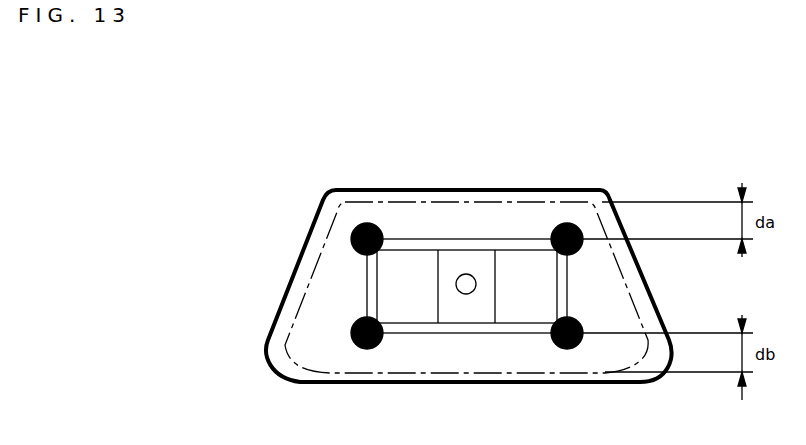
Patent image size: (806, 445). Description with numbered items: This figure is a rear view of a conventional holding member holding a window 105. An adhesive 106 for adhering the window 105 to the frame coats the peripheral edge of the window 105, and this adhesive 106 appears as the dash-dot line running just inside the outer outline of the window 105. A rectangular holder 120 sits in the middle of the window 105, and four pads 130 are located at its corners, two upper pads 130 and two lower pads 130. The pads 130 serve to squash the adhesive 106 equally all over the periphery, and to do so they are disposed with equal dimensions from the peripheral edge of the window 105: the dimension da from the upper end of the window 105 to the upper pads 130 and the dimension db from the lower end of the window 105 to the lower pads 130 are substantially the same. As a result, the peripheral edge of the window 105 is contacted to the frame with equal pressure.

The window 105 is at (513, 189).
The adhesive 106 is at (318, 254).
The substrate frame 120 is at (428, 238).
The pads 130 is at (353, 246).